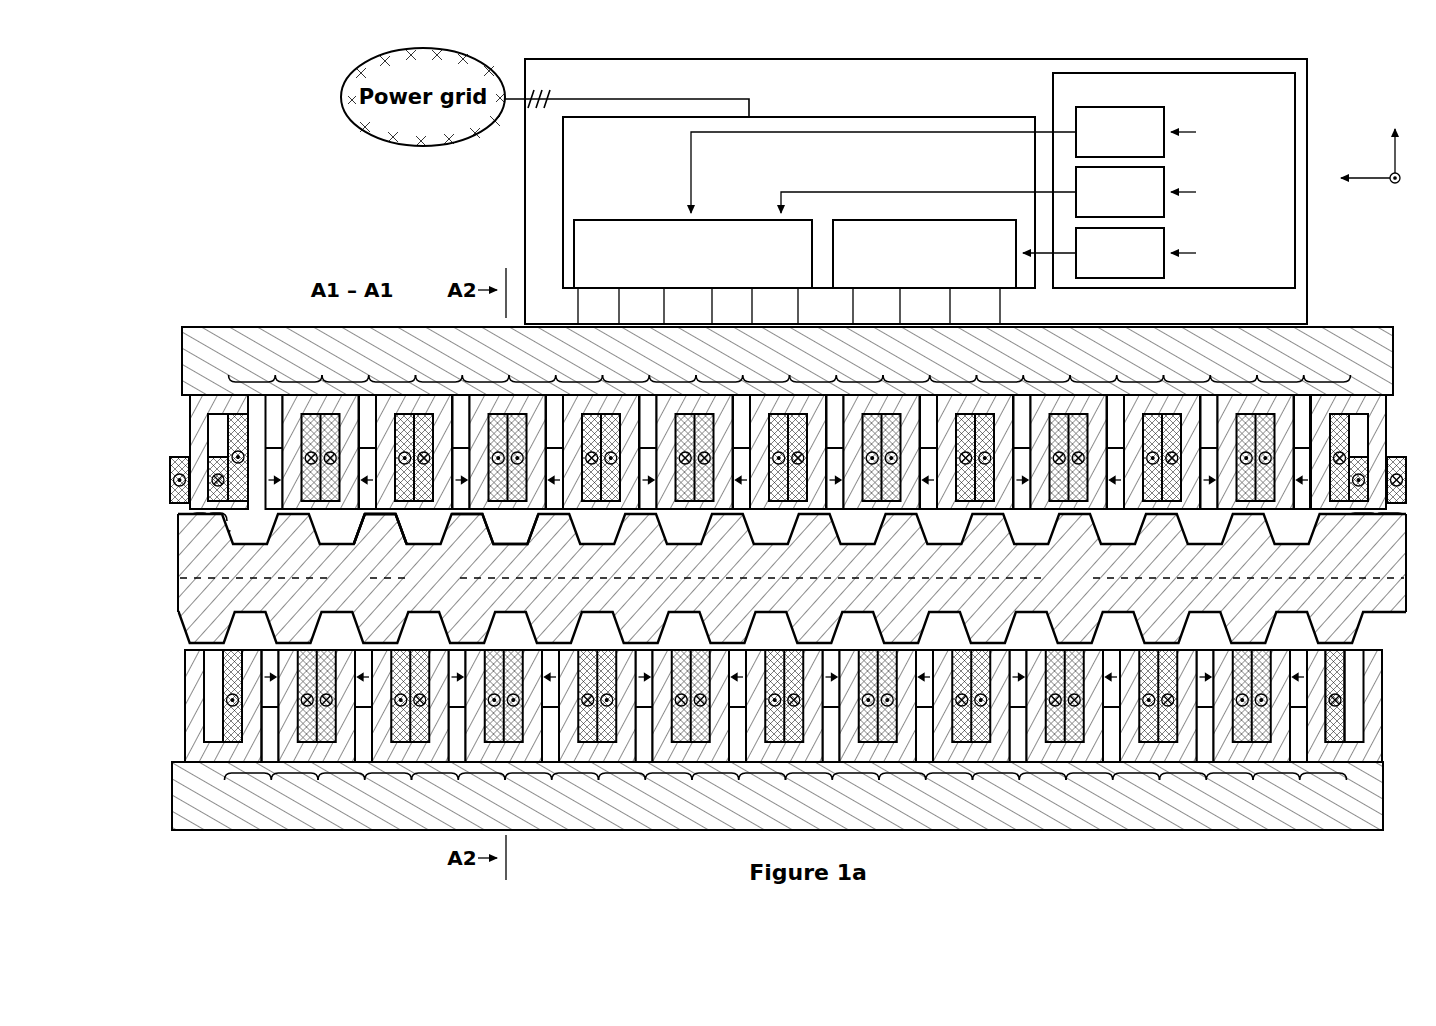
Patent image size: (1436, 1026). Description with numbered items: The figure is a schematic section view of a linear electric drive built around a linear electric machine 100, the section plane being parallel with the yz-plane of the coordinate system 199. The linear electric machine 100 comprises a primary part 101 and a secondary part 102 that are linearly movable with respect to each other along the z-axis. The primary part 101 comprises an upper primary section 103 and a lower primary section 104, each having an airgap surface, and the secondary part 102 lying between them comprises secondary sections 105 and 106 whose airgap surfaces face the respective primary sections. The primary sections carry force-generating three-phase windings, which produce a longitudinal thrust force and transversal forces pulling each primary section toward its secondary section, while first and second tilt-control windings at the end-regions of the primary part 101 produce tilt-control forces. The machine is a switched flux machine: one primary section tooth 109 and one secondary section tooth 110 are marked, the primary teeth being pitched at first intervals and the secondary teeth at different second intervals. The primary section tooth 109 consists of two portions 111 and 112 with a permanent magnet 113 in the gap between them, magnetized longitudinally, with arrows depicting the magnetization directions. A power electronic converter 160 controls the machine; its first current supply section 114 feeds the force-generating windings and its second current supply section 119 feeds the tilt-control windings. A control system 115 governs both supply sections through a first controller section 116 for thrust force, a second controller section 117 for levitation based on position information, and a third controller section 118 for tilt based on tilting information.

The linear electric machine 100 is at (315, 242).
The primary part 101 is at (243, 327).
The secondary part 102 is at (1057, 587).
The primary section 103 is at (163, 323).
The primary section 104 is at (163, 643).
The secondary section 105 is at (886, 569).
The secondary section 106 is at (797, 608).
The primary section tooth 109 is at (338, 519).
The secondary section tooth 110 is at (472, 529).
The portion of primary section tooth 111 is at (352, 515).
The portion of primary section tooth 112 is at (391, 515).
The permanent magnet 113 is at (366, 515).
The first current supply section 114 is at (659, 264).
The control system 115 is at (1244, 201).
The first controller section 116 is at (1104, 143).
The second controller section 117 is at (1104, 203).
The third controller section 118 is at (1104, 264).
The second current supply section 119 is at (914, 264).
The power electronic converter 160 is at (781, 90).
The coordinate system 199 is at (1342, 160).